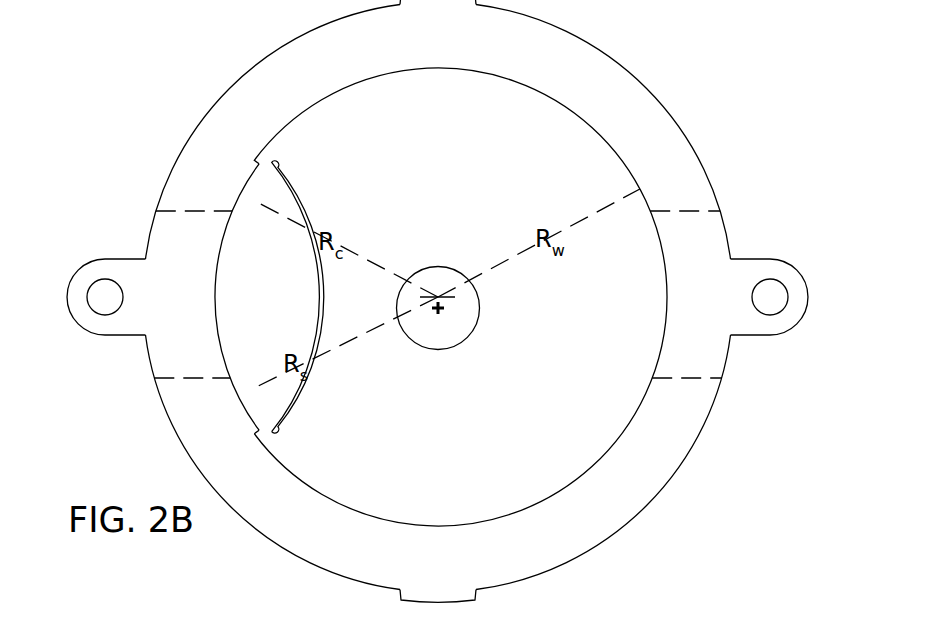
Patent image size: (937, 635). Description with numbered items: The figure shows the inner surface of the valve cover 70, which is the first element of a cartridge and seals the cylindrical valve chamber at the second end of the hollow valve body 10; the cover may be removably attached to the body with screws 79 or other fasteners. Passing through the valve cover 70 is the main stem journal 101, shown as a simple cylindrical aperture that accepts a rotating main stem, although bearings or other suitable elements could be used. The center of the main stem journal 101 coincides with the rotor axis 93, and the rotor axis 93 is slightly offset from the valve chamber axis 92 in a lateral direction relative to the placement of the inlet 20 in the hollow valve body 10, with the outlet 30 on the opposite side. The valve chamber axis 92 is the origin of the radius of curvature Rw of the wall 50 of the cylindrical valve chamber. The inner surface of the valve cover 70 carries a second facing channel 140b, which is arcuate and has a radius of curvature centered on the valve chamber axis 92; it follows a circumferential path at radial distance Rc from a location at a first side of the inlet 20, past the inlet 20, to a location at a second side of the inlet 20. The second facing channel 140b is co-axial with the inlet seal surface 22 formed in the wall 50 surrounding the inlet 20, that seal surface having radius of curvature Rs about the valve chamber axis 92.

The hollow valve body 10 is at (195, 125).
The inlet 20 is at (153, 217).
The outlet 30 is at (728, 368).
The screws 79 is at (107, 295).
The wall 50 is at (563, 485).
The second facing channel 140b is at (233, 283).
The inlet seal surface 22 is at (252, 200).
The valve cover 70 is at (449, 171).
The main stem journal 101 is at (478, 322).
The valve chamber axis 92 is at (438, 295).
The rotor axis 93 is at (450, 296).